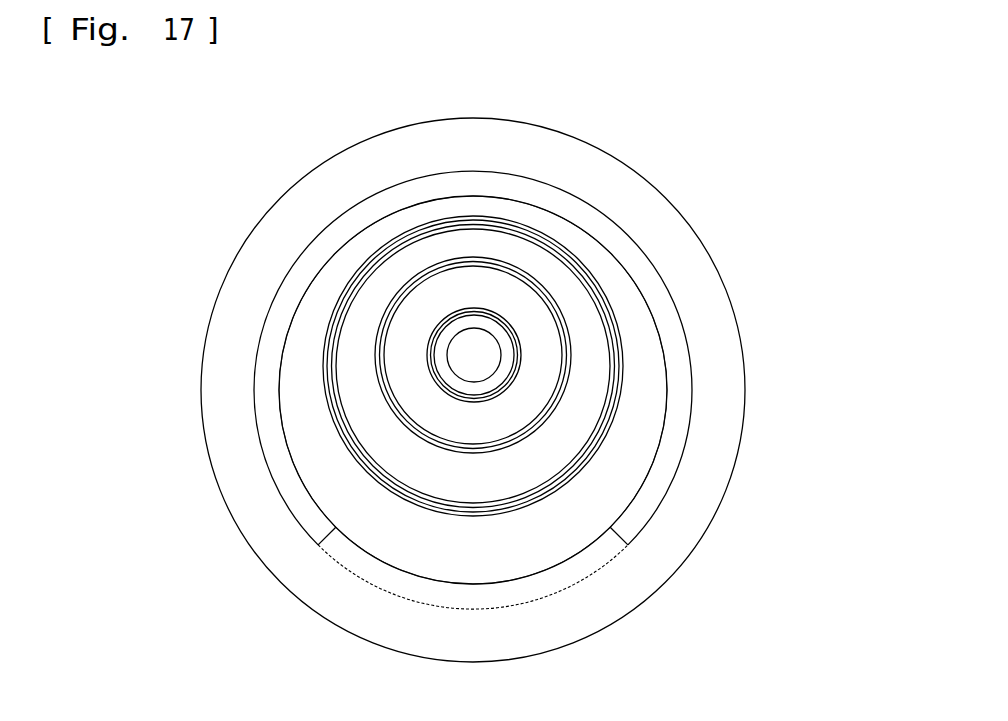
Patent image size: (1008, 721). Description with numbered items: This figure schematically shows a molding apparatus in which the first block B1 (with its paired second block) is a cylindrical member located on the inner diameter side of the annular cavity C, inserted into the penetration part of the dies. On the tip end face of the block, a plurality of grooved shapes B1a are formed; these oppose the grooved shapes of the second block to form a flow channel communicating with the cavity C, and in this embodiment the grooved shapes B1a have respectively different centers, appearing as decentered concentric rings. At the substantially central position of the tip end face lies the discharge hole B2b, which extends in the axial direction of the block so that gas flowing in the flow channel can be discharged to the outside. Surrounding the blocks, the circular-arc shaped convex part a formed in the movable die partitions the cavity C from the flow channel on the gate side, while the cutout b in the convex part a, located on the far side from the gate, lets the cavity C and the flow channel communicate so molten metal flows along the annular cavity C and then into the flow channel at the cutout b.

The cavity C is at (725, 348).
The convex part a is at (670, 460).
The cutout b is at (611, 540).
The first block B1 is at (660, 398).
The grooved shapes B1a is at (540, 333).
The discharge hole B2b is at (452, 367).